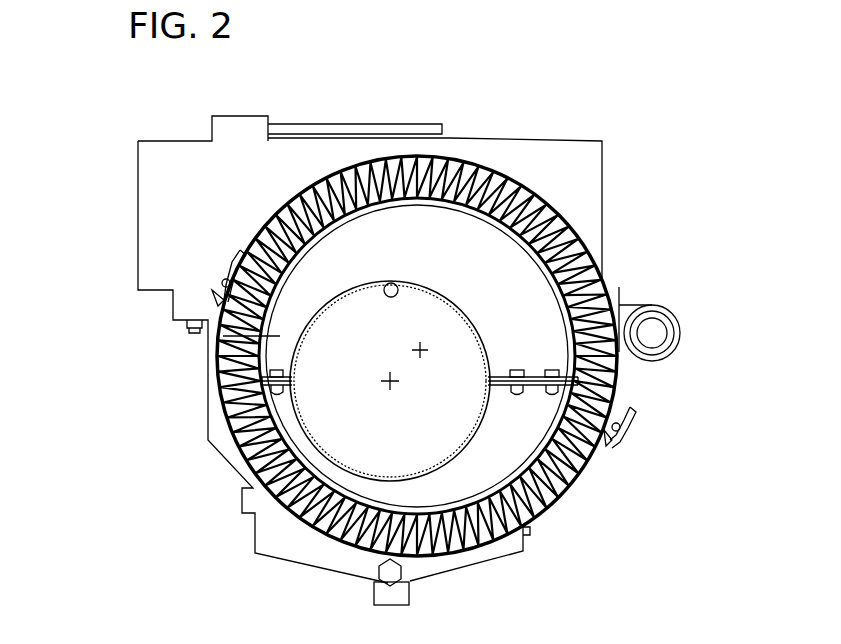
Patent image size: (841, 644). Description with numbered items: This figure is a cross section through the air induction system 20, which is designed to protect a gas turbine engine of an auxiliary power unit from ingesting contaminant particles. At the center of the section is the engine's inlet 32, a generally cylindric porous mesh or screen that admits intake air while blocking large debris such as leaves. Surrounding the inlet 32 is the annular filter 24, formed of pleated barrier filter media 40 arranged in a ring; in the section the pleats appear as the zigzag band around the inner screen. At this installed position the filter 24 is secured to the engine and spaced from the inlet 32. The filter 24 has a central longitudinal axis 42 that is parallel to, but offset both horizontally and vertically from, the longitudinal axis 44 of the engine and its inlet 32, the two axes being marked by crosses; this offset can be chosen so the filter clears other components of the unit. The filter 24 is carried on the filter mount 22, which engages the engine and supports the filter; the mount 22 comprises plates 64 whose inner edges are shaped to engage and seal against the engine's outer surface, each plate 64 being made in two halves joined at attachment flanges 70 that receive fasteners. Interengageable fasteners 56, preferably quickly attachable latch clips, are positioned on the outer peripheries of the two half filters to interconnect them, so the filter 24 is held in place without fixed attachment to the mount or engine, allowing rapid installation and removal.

The air induction system 20 is at (286, 522).
The filter mount 22 is at (477, 215).
The filter 24 is at (541, 193).
The inlet 32 is at (390, 283).
The pleated barrier filter media 40 is at (603, 260).
The central longitudinal axis 42 is at (424, 349).
The longitudinal axis 44 is at (398, 382).
The interengageable fasteners 56 is at (222, 265).
The plate 64 is at (223, 337).
The attachment flanges 70 is at (535, 397).